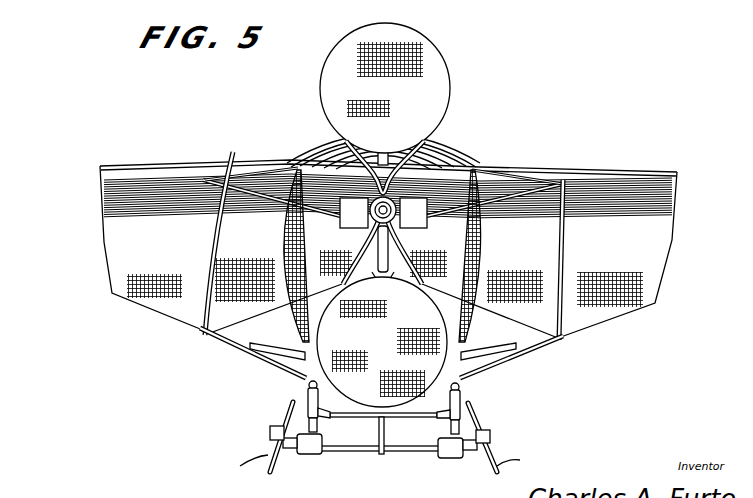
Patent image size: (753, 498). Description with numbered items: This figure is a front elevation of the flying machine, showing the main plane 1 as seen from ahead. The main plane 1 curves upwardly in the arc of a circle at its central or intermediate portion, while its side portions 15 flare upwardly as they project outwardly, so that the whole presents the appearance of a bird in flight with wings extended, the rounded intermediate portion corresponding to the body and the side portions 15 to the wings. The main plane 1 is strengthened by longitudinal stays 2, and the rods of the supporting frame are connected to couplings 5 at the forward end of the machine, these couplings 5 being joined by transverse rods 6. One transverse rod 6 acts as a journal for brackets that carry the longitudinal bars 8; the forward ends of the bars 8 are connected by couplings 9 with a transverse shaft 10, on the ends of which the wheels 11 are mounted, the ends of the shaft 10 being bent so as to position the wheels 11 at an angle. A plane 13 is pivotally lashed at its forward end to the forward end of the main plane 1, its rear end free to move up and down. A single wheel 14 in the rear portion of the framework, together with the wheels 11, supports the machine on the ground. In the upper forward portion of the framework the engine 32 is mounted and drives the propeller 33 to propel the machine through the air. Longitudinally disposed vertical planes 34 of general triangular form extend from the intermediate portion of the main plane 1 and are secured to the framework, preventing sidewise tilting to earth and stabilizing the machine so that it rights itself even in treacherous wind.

The main plane 1 is at (432, 147).
The longitudinal stays 2 is at (233, 152).
The couplings 5 is at (327, 415).
The transverse rods 6 is at (390, 417).
The longitudinal bars 8 is at (307, 396).
The couplings 9 is at (311, 455).
The transverse shaft 10 is at (415, 452).
The wheels 11 is at (270, 458).
The plane 13 is at (448, 165).
The single wheel 14 is at (380, 455).
The side portions 15 is at (104, 231).
The engine 32 is at (383, 243).
The propeller 33 is at (433, 72).
The vertical planes 34 is at (290, 256).